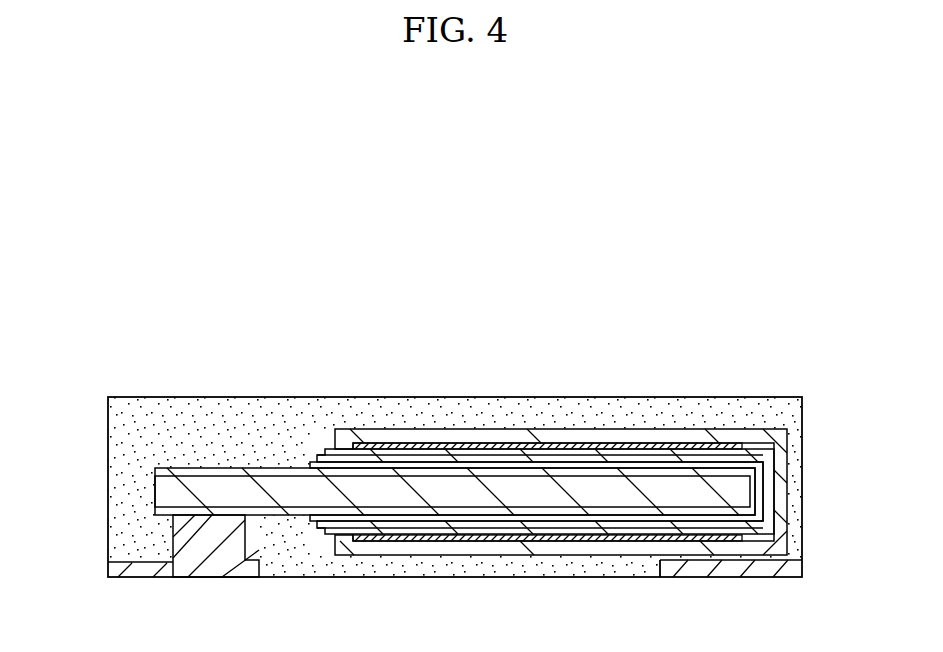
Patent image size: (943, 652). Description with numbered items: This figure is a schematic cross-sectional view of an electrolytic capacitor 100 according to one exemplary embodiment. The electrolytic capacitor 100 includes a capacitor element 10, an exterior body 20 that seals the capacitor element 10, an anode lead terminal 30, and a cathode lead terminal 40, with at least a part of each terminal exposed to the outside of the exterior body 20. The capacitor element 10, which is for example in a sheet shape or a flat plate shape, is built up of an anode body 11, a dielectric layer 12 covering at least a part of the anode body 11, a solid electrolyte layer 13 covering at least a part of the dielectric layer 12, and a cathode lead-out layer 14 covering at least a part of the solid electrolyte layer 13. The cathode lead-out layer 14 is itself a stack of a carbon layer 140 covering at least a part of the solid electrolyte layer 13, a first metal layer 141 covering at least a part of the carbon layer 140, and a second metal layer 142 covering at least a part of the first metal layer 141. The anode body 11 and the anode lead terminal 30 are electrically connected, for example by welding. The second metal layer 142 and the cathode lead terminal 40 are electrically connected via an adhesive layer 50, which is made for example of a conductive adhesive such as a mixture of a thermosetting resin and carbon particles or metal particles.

The electrolytic capacitor 100 is at (675, 218).
The capacitor element 10 is at (520, 291).
The anode body 11 is at (203, 485).
The dielectric layer 12 is at (288, 470).
The solid electrolyte layer 13 is at (366, 470).
The cathode lead-out layer 14 is at (593, 328).
The carbon layer 140 is at (407, 455).
The first metal layer 141 is at (467, 445).
The second metal layer 142 is at (537, 430).
The exterior body 20 is at (132, 448).
The anode lead terminal 30 is at (212, 565).
The cathode lead terminal 40 is at (690, 566).
The adhesive layer 50 is at (657, 563).